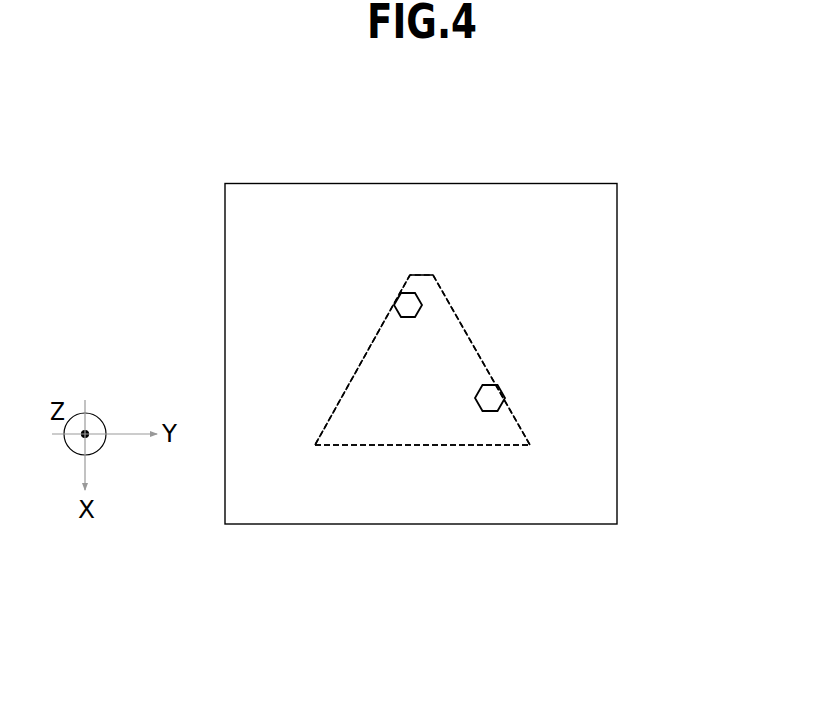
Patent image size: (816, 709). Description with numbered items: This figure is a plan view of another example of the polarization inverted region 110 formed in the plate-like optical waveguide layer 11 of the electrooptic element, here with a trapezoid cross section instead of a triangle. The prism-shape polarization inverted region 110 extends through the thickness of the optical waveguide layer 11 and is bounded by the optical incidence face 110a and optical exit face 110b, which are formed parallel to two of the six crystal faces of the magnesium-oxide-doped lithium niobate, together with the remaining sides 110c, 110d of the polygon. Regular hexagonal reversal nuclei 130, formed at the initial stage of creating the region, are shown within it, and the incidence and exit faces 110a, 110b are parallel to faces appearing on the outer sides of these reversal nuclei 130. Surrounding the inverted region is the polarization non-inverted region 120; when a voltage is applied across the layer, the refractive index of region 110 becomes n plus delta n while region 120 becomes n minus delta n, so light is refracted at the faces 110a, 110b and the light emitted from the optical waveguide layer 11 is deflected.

The optical waveguide layer 11 is at (363, 173).
The polarization inverted region 110 is at (417, 433).
The optical incidence face 110a is at (377, 323).
The optical exit face 110b is at (465, 315).
The truncated apex of light emitting element 110c is at (418, 267).
The base side of light emitting element 110d is at (338, 452).
The polarization non-inverted region 120 is at (598, 231).
The reversal nuclei 130 is at (408, 293).